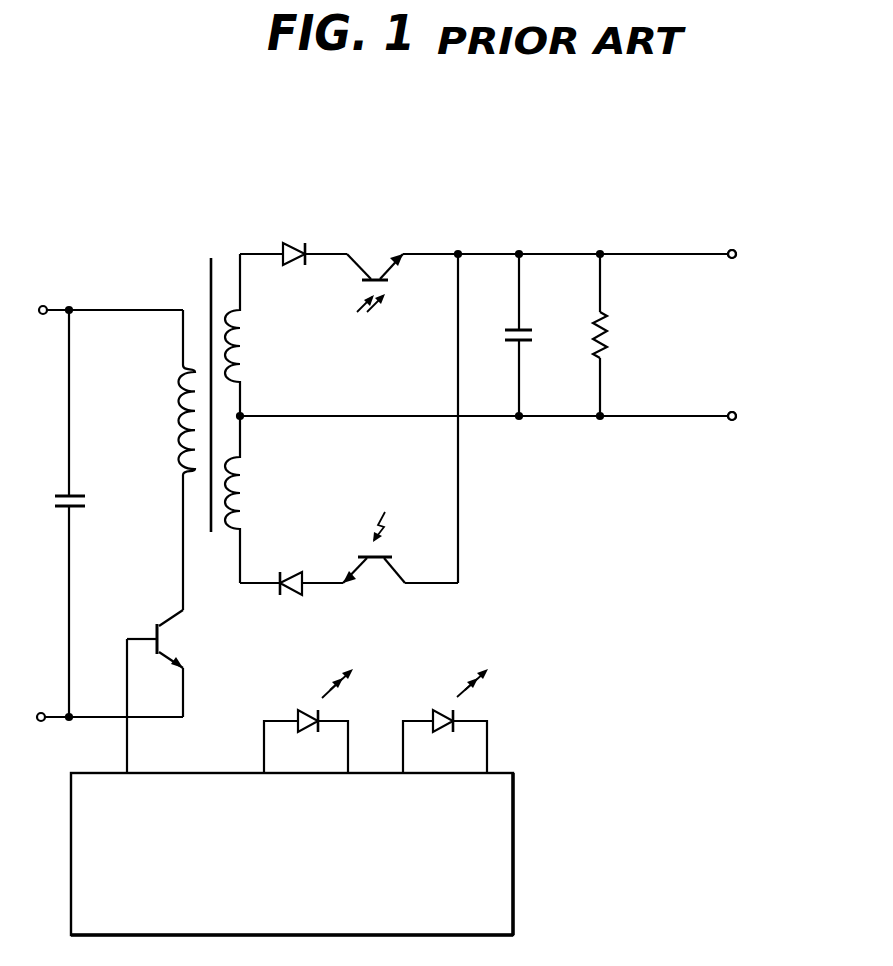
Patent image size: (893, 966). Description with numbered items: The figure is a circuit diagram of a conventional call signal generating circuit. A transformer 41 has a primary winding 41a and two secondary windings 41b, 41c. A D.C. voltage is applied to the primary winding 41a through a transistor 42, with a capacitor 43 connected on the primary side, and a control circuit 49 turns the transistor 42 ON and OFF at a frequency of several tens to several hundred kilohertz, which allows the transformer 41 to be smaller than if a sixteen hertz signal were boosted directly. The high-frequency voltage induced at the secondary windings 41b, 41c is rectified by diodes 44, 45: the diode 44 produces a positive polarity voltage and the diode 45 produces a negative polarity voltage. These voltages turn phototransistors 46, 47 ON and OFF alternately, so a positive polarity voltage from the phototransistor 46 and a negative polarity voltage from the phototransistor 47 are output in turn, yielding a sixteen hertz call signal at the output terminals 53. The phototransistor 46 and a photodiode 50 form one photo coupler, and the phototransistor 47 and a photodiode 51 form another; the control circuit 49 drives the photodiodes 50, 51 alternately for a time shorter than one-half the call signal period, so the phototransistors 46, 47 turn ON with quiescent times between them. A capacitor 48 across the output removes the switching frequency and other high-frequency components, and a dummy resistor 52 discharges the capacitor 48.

The transformer 41 is at (204, 395).
The primary winding 41a is at (173, 418).
The secondary winding 41b is at (246, 356).
The secondary winding 41c is at (243, 518).
The transistor 42 is at (152, 633).
The capacitor 43 is at (78, 508).
The diode 44 is at (298, 243).
The diode 45 is at (296, 573).
The phototransistor 46 is at (380, 268).
The phototransistor 47 is at (373, 563).
The capacitor 48 is at (527, 347).
The control circuit 49 is at (515, 855).
The photodiode 50 is at (308, 712).
The photodiode 51 is at (445, 708).
The dummy resistor 52 is at (612, 335).
The output terminals 53 is at (730, 262).